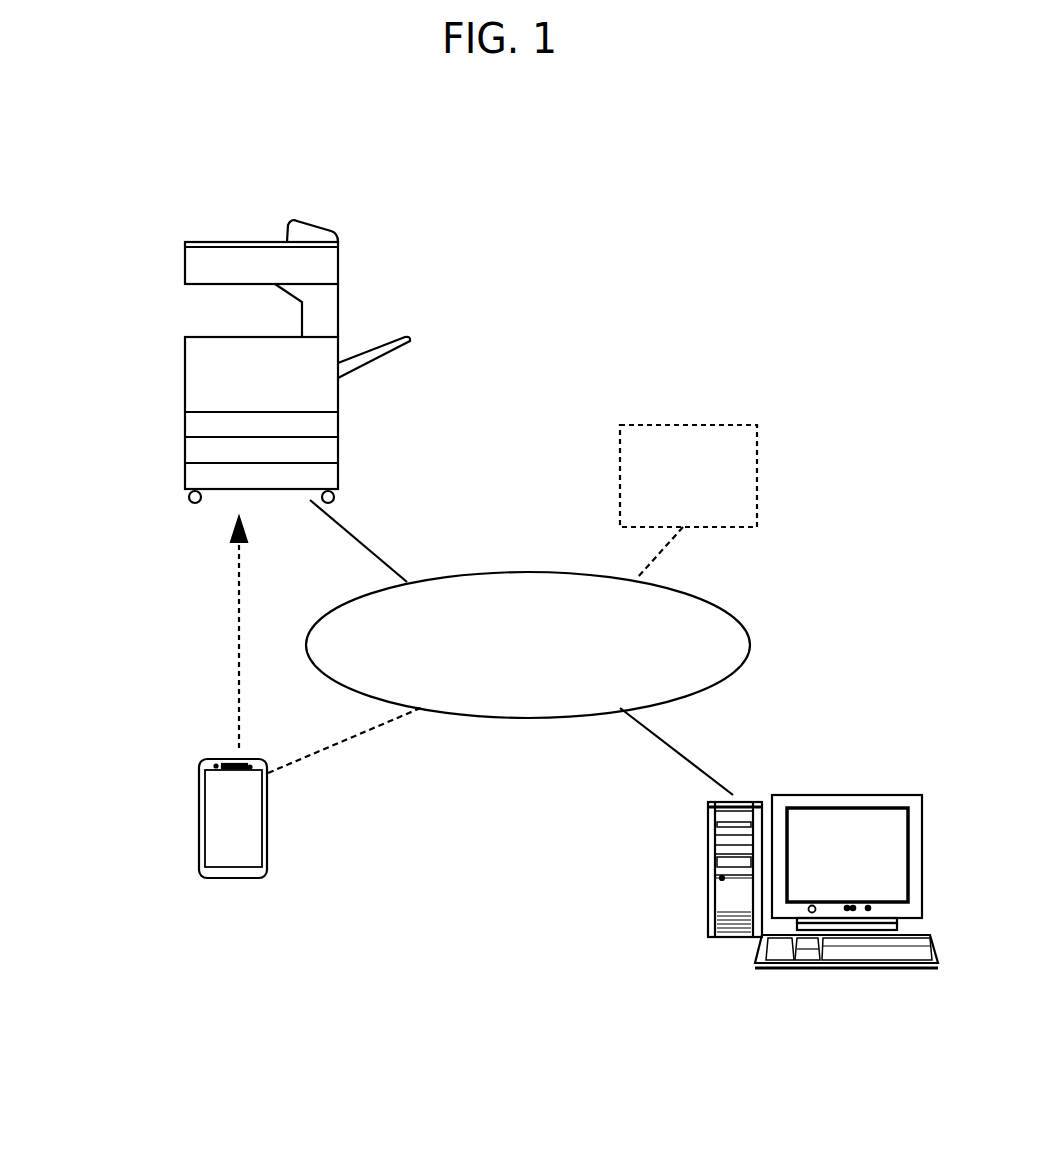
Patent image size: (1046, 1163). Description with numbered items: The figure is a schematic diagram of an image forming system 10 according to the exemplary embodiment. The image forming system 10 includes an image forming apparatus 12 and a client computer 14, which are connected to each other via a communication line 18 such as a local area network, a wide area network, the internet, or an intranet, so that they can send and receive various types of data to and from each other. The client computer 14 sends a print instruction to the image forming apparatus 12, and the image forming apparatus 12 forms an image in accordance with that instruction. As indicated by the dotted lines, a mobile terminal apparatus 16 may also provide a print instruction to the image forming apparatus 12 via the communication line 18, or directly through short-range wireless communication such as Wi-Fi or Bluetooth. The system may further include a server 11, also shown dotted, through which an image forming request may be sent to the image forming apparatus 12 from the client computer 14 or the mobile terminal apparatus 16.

The image forming system 10 is at (783, 201).
The server 11 is at (692, 424).
The image forming apparatus 12 is at (183, 253).
The client computer 14 is at (810, 797).
The mobile terminal apparatus 16 is at (212, 759).
The communication line 18 is at (535, 572).